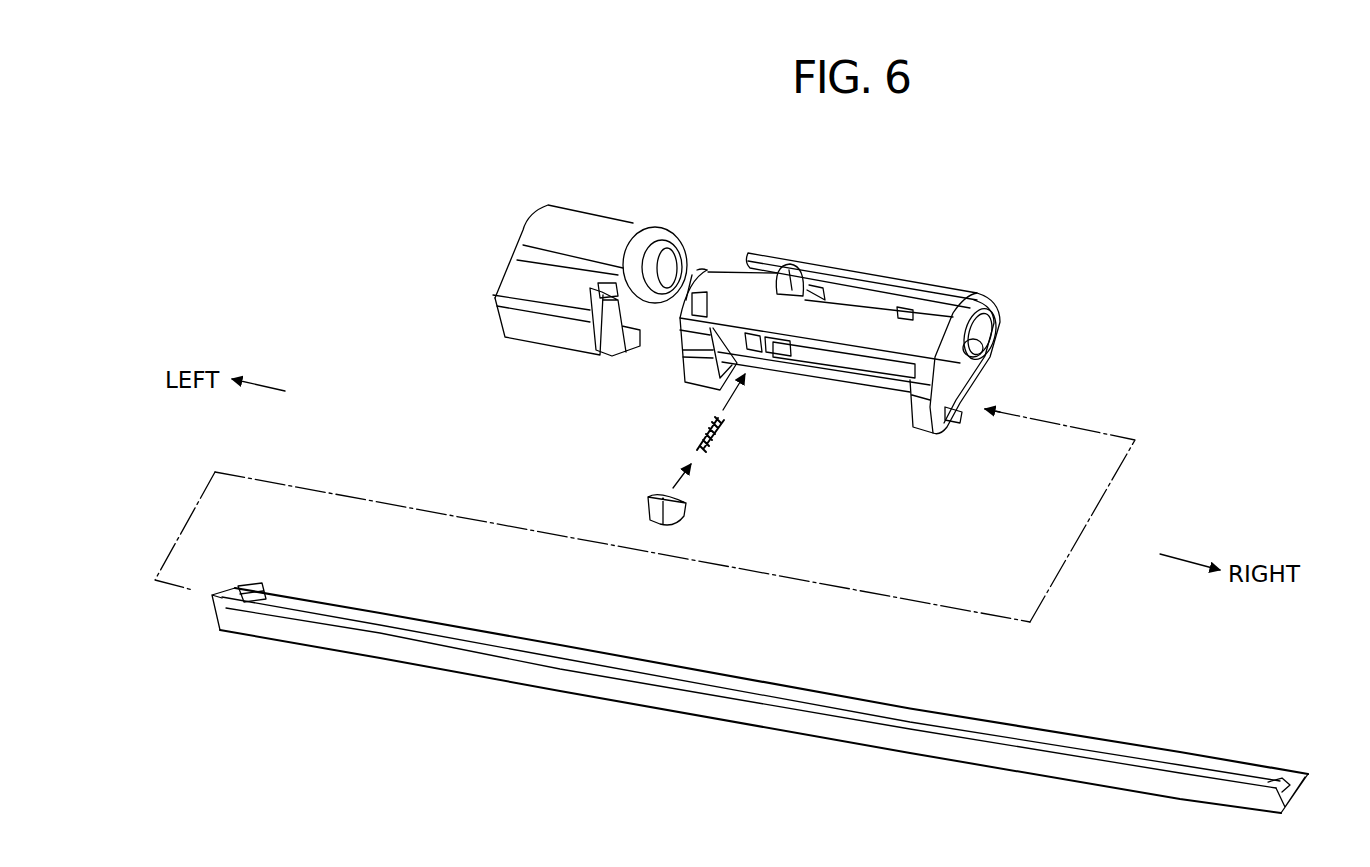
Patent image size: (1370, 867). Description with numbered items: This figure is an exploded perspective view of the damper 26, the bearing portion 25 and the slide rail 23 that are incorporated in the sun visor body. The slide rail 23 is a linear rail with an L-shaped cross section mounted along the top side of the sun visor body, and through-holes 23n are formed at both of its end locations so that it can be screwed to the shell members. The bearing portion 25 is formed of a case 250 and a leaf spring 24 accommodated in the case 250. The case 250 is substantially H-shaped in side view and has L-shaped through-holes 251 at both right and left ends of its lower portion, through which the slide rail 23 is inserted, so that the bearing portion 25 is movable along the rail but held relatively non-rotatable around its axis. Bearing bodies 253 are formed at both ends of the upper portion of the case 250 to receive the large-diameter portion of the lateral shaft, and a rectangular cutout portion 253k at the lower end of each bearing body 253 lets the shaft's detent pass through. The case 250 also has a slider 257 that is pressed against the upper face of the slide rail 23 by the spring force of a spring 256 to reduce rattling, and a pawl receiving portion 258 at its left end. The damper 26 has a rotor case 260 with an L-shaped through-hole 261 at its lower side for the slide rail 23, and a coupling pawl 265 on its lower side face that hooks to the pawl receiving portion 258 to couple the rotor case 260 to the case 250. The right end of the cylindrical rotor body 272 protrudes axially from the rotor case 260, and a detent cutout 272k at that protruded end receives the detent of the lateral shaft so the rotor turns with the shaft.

The slide rail 23 is at (614, 690).
The through-hole of the slide rail 23n is at (253, 597).
The leaf spring 24 is at (872, 330).
The bearing portion 25 is at (872, 330).
The damper 26 is at (543, 275).
The case 250 is at (852, 340).
The L-shaped through-hole 251 is at (710, 340).
The bearing body 253 is at (790, 266).
The rectangular cutout portion 253k is at (992, 348).
The spring 256 is at (722, 426).
The slider 257 is at (688, 513).
The pawl receiving portion 258 is at (690, 280).
The rotor case 260 is at (530, 278).
The L-shaped through-hole 261 is at (615, 358).
The coupling pawl 265 is at (600, 287).
The rotor body 272 is at (670, 222).
The detent cutout 272k is at (641, 228).